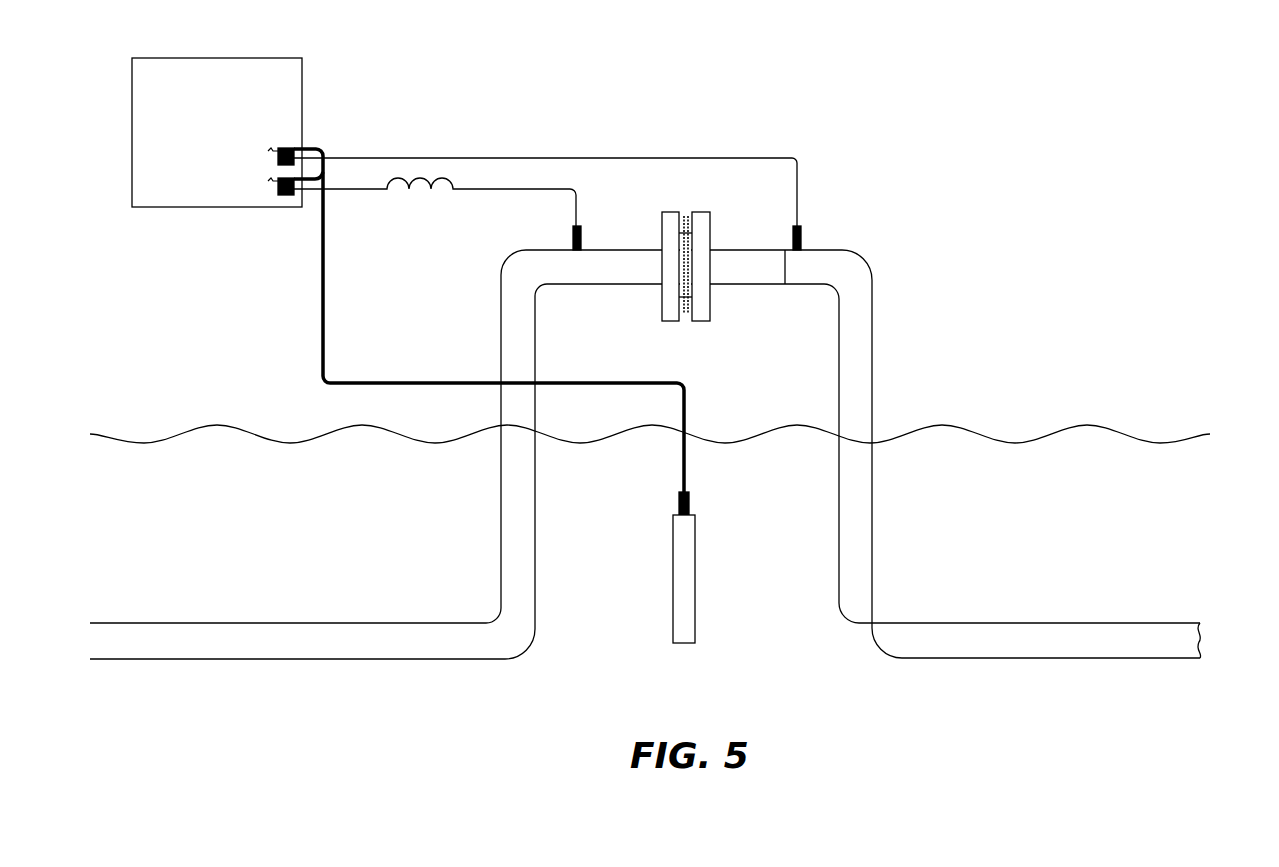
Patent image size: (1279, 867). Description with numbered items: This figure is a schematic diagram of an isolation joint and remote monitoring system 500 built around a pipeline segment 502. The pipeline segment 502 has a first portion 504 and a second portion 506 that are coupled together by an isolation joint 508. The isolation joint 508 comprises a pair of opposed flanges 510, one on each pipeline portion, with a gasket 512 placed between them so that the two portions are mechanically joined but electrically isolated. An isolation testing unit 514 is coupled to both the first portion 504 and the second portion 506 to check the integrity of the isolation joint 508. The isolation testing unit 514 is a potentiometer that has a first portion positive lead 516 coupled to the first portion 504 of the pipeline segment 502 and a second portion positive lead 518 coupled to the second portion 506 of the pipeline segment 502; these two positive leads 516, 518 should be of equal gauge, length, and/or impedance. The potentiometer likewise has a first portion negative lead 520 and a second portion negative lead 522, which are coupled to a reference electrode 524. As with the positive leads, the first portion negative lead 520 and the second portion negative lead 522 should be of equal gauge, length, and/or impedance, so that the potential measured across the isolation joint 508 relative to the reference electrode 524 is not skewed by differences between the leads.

The isolation joint and remote monitoring system 500 is at (751, 47).
The pipeline segment 502 is at (856, 575).
The first portion 504 is at (872, 487).
The second portion 506 is at (501, 508).
The isolation joint 508 is at (667, 295).
The opposed flanges 510 is at (704, 217).
The gasket 512 is at (677, 214).
The isolation testing unit 514 is at (235, 154).
The first portion positive lead 516 is at (797, 185).
The second portion positive lead 518 is at (575, 210).
The first portion negative lead 520 is at (312, 178).
The second portion negative lead 522 is at (323, 294).
The reference electrode 524 is at (695, 565).